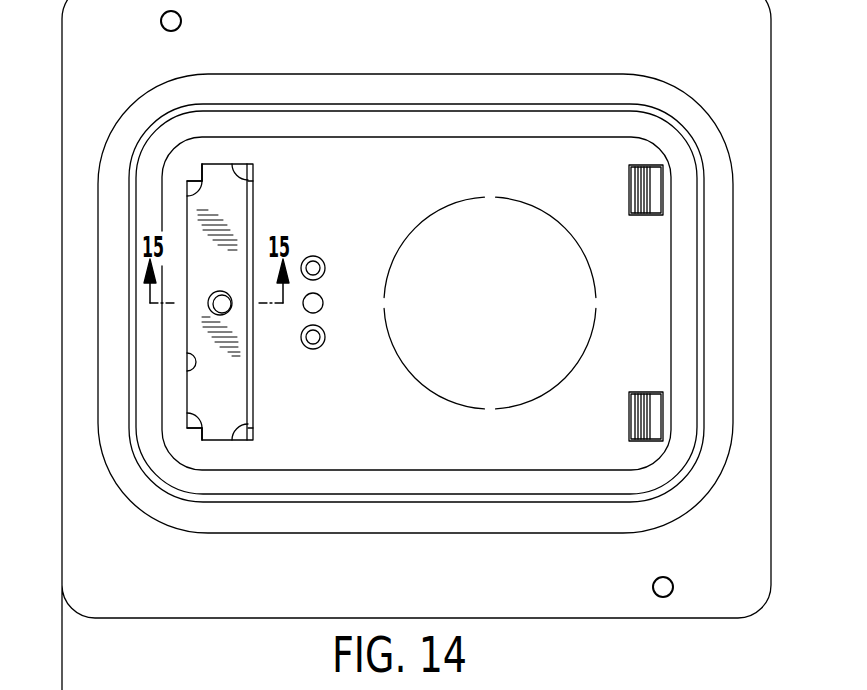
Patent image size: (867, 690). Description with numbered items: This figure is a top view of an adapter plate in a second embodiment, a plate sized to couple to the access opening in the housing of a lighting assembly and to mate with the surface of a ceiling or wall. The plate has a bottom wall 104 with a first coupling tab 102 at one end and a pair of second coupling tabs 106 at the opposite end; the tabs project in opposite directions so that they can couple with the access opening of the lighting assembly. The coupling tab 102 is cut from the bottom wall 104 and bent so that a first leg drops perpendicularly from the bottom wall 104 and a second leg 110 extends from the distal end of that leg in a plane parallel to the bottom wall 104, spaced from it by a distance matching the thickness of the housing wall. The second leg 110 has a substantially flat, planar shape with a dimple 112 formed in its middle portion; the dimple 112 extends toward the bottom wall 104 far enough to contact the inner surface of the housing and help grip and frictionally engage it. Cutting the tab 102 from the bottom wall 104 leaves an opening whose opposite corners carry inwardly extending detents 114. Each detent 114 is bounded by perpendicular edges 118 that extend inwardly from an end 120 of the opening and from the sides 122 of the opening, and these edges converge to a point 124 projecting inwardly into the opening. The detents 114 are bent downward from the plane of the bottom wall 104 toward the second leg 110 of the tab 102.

The first coupling tab 102 is at (247, 410).
The bottom wall 104 is at (443, 435).
The second coupling tabs 106 is at (640, 195).
The second leg 110 is at (220, 360).
The dimple 112 is at (210, 309).
The detents 114 is at (200, 178).
The perpendicular edges 118 is at (202, 181).
The end of the opening 120 is at (190, 356).
The sides of the opening 122 is at (250, 182).
The point 124 is at (202, 167).